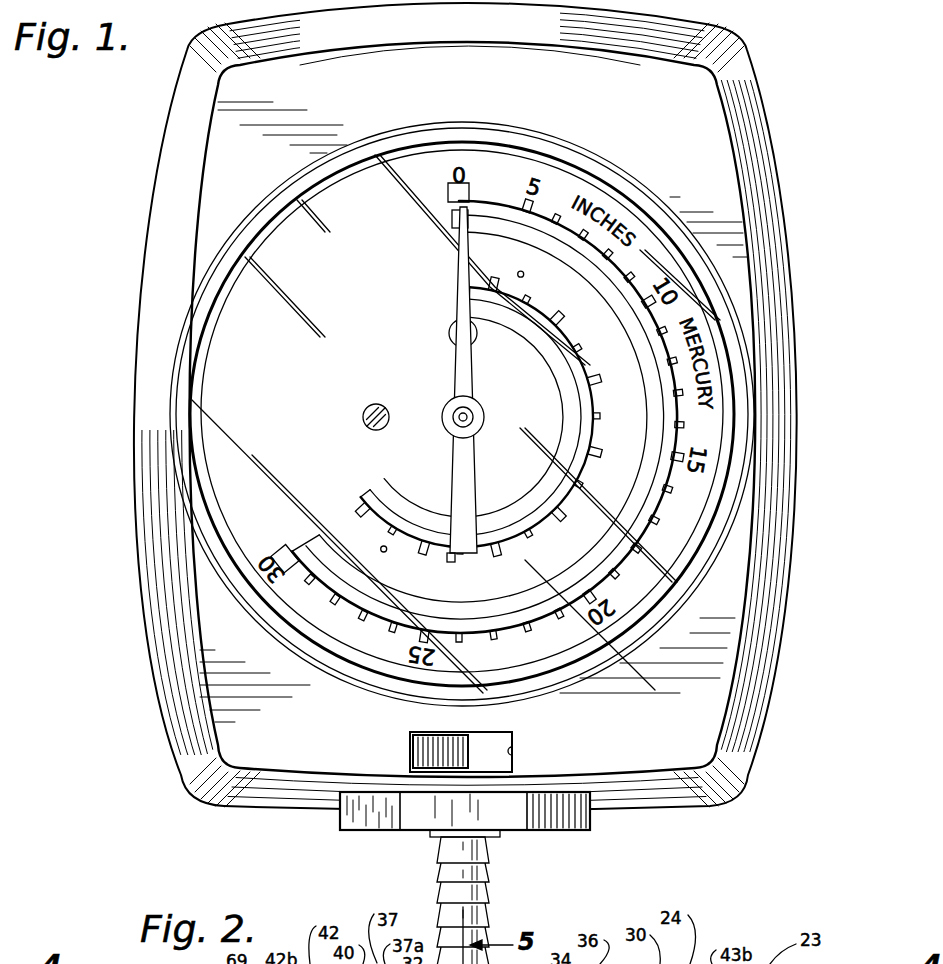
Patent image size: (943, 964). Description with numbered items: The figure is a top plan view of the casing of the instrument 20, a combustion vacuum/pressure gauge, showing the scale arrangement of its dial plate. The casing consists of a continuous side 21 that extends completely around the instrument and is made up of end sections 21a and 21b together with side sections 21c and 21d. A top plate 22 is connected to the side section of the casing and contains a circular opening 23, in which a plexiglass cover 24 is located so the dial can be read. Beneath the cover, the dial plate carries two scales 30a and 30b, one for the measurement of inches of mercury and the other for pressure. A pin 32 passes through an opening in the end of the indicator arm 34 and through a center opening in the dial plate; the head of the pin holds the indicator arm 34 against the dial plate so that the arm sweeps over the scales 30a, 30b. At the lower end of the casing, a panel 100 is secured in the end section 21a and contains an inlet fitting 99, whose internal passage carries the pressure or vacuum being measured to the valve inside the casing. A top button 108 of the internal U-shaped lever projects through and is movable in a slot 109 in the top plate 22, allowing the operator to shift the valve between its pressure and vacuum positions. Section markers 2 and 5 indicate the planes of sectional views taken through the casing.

The instrument 20 is at (780, 137).
The continuous side 21 is at (797, 495).
The end section 21a is at (665, 806).
The end section 21b is at (706, 36).
The side section 21c is at (148, 570).
The side section 21d is at (777, 598).
The top plate 22 is at (250, 738).
The circular opening 23 is at (200, 499).
The plexiglass cover 24 is at (247, 307).
The scale 30a is at (450, 214).
The scale 30b is at (367, 493).
The pin 32 is at (452, 393).
The indicator arm 34 is at (477, 450).
The inlet fitting 99 is at (487, 888).
The panel 100 is at (420, 818).
The top button 108 is at (413, 745).
The slot 109 is at (507, 750).
The section line 2- 2 is at (120, 415).
The section line 5- 5 is at (464, 7).